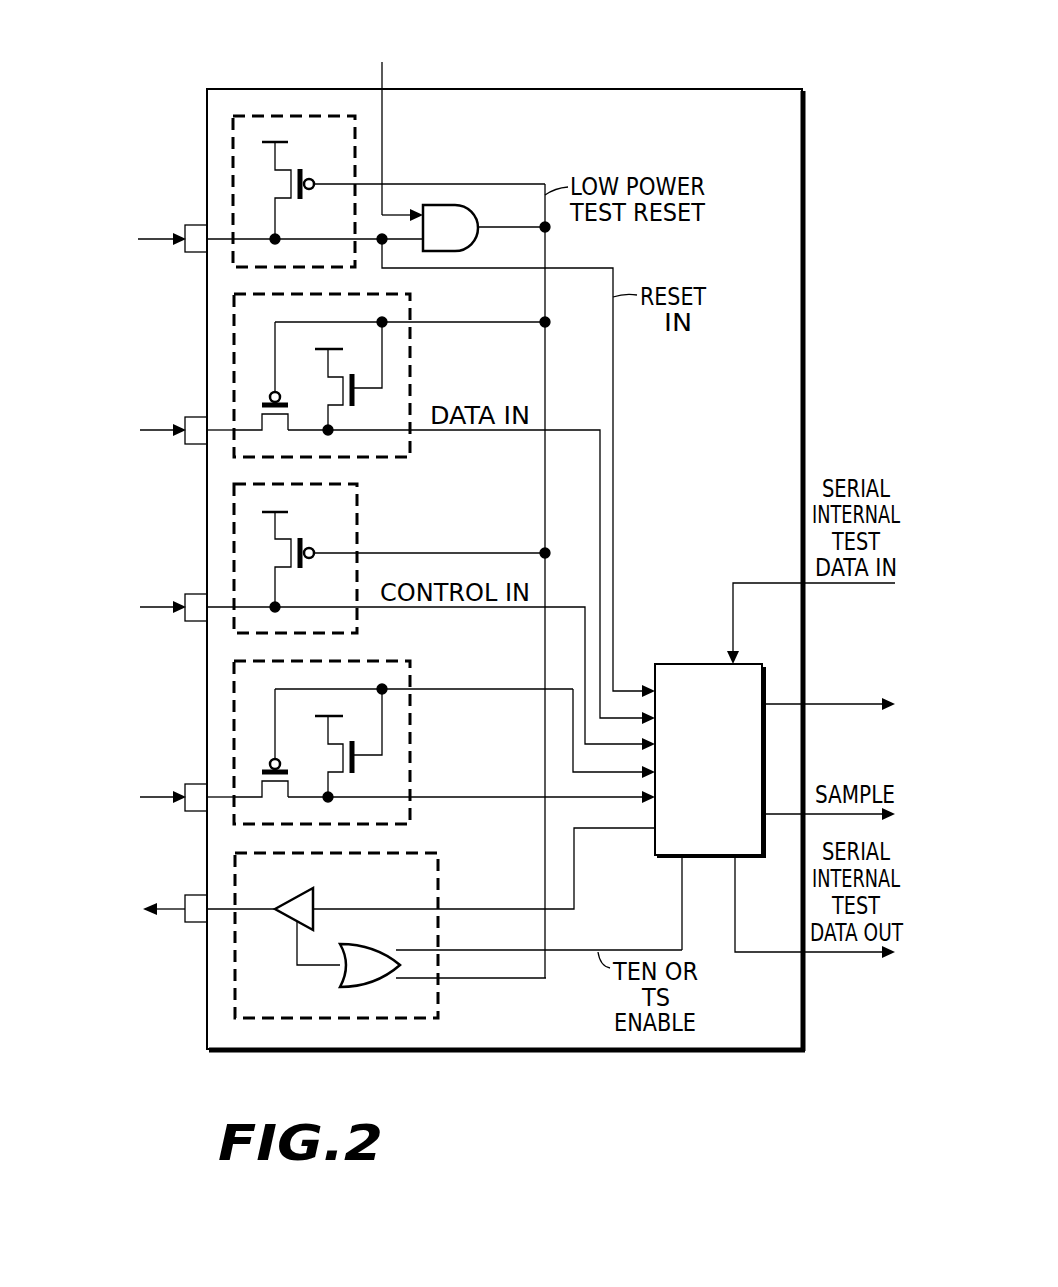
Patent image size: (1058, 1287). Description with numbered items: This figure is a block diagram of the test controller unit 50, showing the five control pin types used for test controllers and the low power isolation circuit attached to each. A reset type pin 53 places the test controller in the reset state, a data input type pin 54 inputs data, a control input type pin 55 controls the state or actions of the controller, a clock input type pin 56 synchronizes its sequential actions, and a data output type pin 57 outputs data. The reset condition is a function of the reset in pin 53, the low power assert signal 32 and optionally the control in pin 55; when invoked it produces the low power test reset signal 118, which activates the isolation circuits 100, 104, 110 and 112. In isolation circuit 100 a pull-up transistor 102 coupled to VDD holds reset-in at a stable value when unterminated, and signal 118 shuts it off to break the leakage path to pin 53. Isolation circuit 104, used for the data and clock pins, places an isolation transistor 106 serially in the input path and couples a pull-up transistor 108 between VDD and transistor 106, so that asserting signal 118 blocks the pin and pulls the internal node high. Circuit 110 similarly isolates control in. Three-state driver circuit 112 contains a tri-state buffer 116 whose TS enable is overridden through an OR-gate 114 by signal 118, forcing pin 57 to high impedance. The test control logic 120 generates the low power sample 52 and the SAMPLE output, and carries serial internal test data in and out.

The low power mode signal 32 is at (382, 114).
The test controller unit 50 is at (760, 134).
The low power sample 52 is at (840, 705).
The reset type pin 53 is at (186, 226).
The data input type pin 54 is at (186, 420).
The control input type pin 55 is at (186, 598).
The clock input type pin 56 is at (186, 788).
The data output type pin 57 is at (186, 898).
The isolation circuit 100 is at (389, 190).
The pull-up transistor 102 is at (300, 199).
The isolation circuit 104 is at (403, 559).
The isolation transistor 106 is at (265, 396).
The pull-up transistor 108 is at (354, 402).
The isolation circuit 110 is at (347, 509).
The three-state driver circuit 112 is at (458, 935).
The OR-gate 114 is at (348, 982).
The tri-state buffer 116 is at (300, 892).
The low power test reset signal 118 is at (480, 244).
The test control logic 120 is at (752, 849).